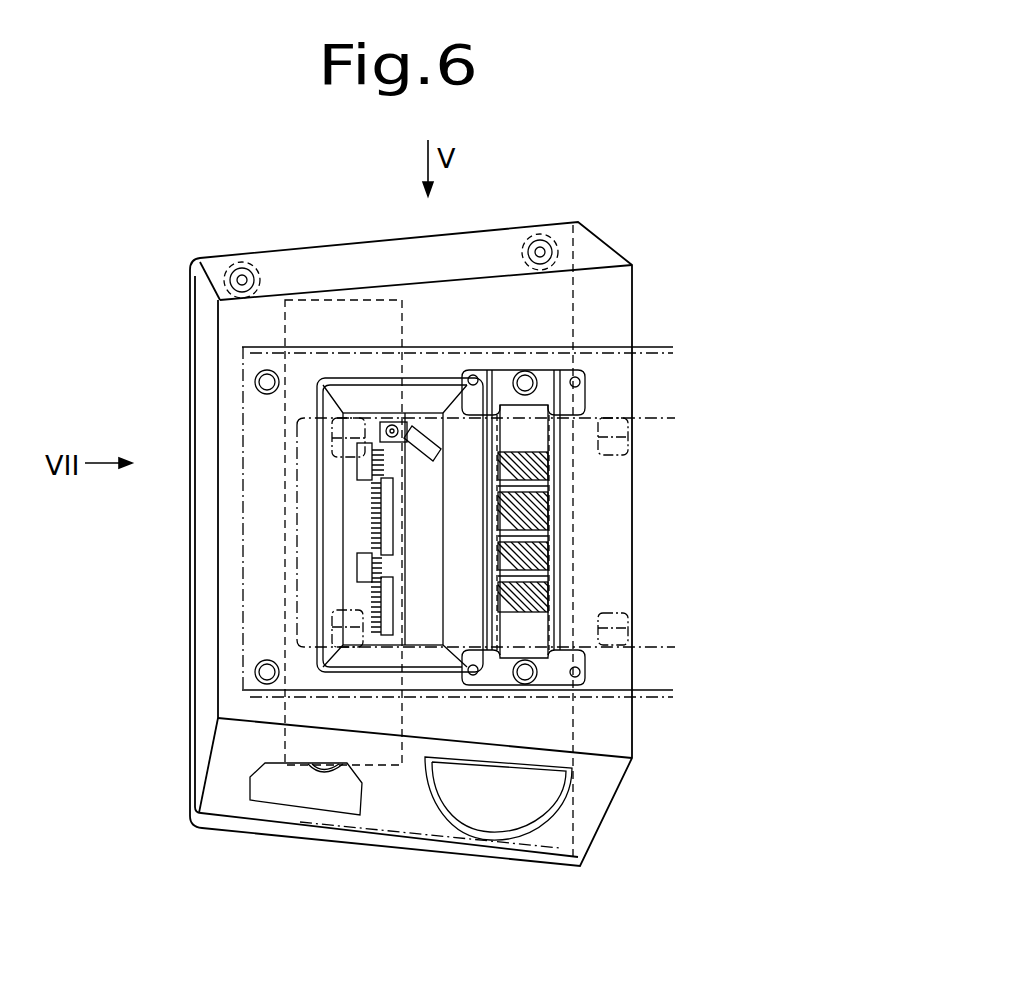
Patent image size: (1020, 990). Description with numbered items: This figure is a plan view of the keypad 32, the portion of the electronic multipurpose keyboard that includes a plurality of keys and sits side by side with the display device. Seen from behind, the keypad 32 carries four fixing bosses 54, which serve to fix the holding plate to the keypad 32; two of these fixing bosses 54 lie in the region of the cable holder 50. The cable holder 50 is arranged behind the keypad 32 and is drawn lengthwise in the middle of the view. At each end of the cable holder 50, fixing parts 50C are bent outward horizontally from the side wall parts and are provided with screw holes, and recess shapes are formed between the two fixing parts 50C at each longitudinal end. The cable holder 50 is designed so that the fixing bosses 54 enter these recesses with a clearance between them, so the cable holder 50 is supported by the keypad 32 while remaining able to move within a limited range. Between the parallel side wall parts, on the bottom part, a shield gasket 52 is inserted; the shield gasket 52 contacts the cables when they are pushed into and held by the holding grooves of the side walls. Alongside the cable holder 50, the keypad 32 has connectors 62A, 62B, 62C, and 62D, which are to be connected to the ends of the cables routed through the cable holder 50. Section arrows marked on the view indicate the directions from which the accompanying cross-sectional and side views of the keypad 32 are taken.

The keypad 32 is at (483, 250).
The fixing bosses 54 is at (255, 382).
The connector 62A is at (357, 462).
The connector 62B is at (357, 560).
The connector 62C is at (372, 600).
The connector 62D is at (372, 503).
The cable holder 50 is at (560, 540).
The fixing parts 50C is at (580, 394).
The shield gasket 52 is at (560, 472).